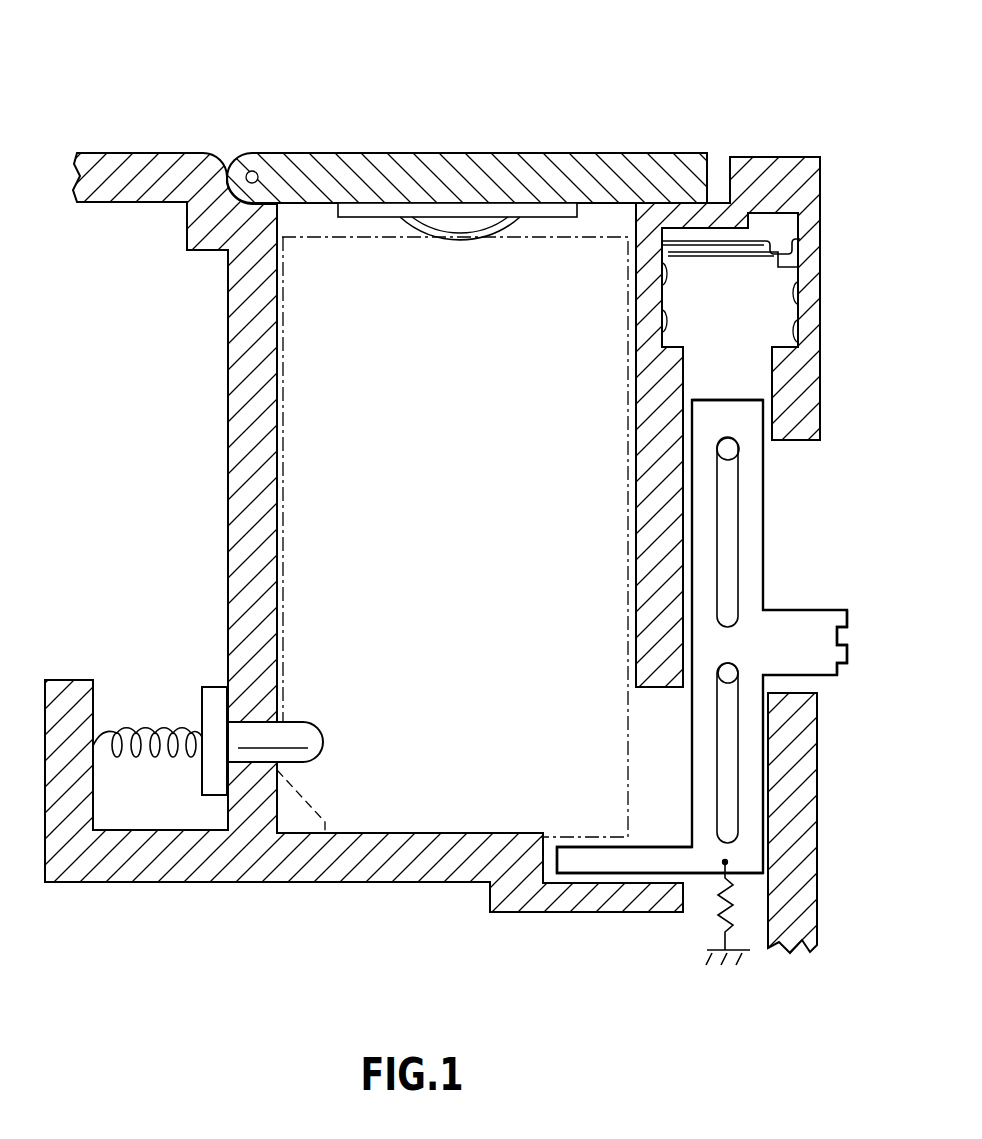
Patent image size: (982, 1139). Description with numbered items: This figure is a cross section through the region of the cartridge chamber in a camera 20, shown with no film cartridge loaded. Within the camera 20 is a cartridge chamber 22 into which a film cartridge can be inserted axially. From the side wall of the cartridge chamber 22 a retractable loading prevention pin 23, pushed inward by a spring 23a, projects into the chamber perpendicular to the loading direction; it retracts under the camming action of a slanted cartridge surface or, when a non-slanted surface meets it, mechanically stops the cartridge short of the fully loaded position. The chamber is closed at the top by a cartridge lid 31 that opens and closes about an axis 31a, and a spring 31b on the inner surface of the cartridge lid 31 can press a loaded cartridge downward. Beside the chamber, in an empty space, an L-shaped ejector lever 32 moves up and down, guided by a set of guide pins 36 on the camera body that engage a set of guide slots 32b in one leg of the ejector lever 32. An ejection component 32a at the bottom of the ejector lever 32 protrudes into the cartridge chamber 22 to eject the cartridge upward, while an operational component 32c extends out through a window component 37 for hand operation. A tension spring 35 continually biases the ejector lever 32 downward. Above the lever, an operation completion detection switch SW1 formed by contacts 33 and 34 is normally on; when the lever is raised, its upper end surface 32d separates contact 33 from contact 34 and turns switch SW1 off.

The camera 20 is at (757, 128).
The cartridge chamber 22 is at (293, 812).
The loading prevention pin 23 is at (313, 743).
The spring 23a is at (152, 725).
The cartridge lid 31 is at (570, 175).
The axis 31a is at (250, 170).
The spring 31b is at (363, 190).
The ejector lever 32 is at (753, 505).
The ejection component 32a is at (578, 852).
The guide slots 32b is at (727, 577).
The operational component 32c is at (817, 657).
The upper end surface 32d is at (708, 410).
The contact 33 is at (697, 248).
The contact 34 is at (782, 266).
The tension spring 35 is at (712, 918).
The guide pins 36 is at (722, 457).
The window component 37 is at (800, 443).
The operation completion detection switch SW1 is at (721, 288).